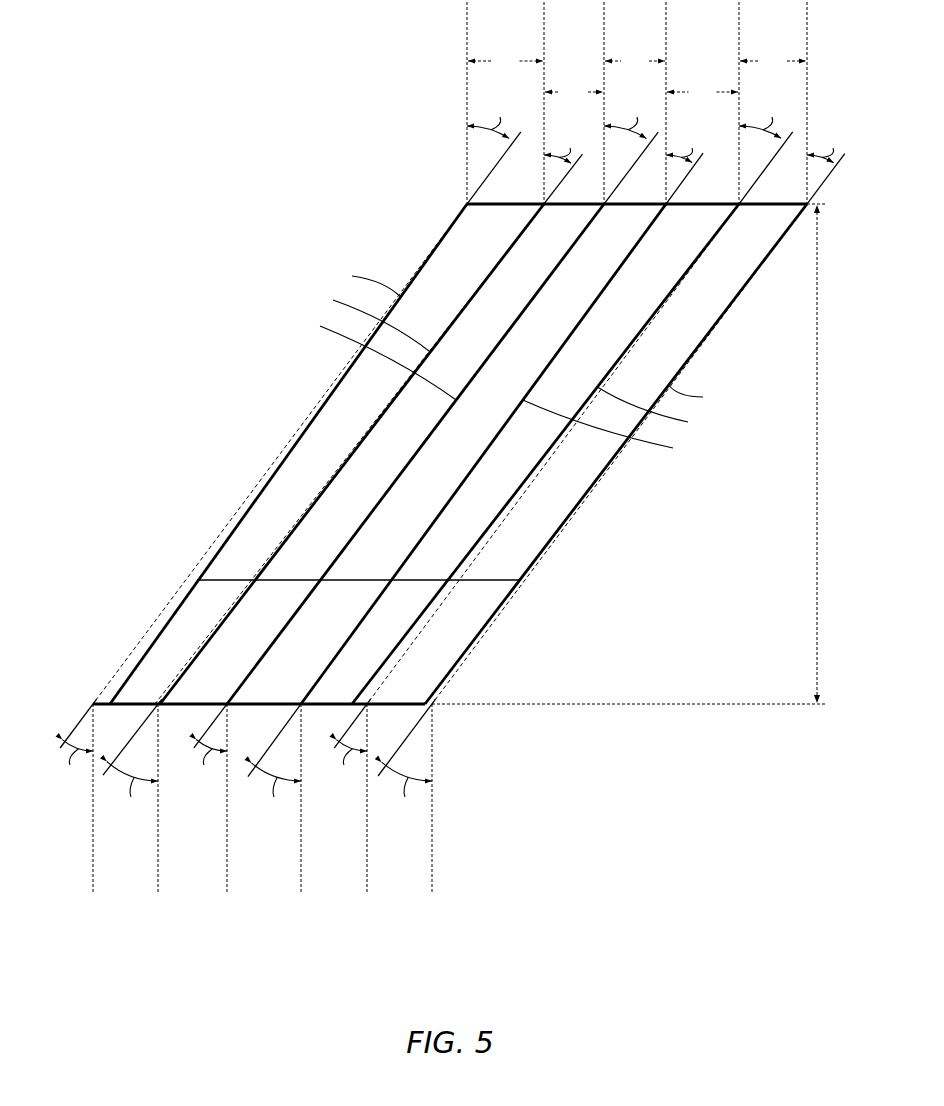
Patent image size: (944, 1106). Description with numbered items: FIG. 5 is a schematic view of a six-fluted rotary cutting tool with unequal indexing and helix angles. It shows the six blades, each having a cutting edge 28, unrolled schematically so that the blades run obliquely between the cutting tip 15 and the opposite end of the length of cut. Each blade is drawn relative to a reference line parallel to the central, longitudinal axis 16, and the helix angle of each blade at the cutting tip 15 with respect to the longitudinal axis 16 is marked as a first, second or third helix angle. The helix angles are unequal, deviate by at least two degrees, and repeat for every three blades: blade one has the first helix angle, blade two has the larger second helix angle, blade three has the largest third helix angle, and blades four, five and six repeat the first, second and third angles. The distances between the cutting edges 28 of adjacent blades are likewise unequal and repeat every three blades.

The cutting tip 15 is at (487, 200).
The longitudinal axis 16 is at (466, 10).
The cutting edge 28 is at (427, 258).